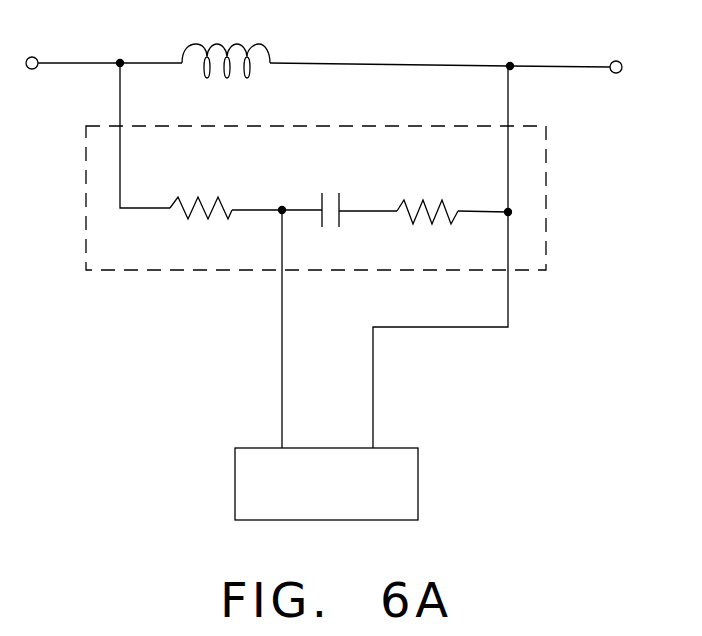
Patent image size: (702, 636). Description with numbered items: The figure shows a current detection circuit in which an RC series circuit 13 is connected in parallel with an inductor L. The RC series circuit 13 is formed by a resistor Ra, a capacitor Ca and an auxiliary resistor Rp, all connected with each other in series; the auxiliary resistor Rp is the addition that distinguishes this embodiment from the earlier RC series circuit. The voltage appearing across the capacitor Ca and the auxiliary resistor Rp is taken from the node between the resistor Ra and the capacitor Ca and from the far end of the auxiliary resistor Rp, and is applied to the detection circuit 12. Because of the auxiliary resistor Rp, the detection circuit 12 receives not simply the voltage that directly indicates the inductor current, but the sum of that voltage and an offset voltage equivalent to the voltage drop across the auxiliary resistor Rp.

The detection circuit 12 is at (419, 481).
The RC series circuit 13 is at (353, 166).
The inductor L is at (226, 43).
The resistor Ra is at (201, 187).
The capacitor Ca is at (337, 190).
The auxiliary resistor Rp is at (427, 189).